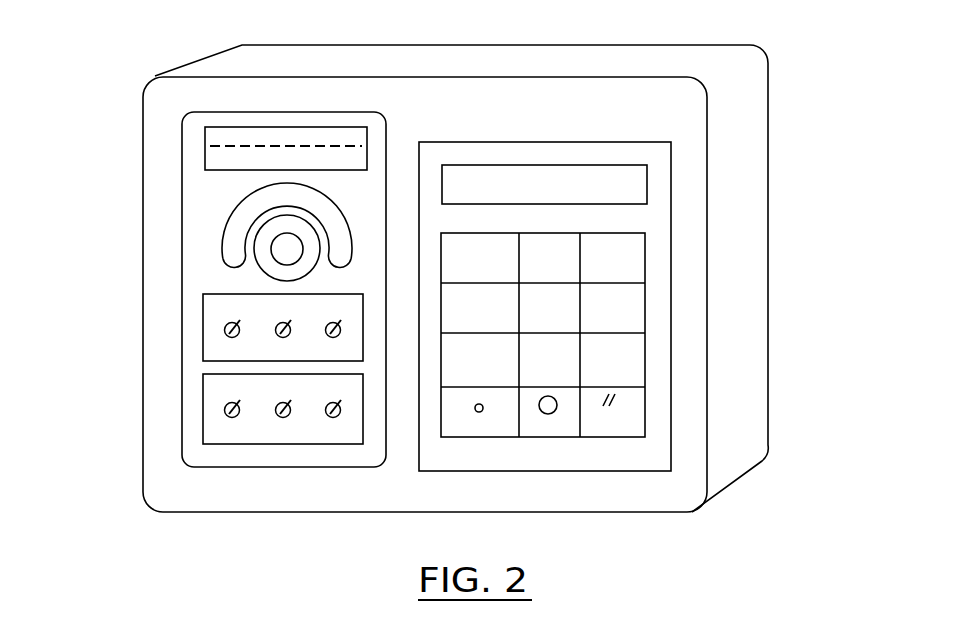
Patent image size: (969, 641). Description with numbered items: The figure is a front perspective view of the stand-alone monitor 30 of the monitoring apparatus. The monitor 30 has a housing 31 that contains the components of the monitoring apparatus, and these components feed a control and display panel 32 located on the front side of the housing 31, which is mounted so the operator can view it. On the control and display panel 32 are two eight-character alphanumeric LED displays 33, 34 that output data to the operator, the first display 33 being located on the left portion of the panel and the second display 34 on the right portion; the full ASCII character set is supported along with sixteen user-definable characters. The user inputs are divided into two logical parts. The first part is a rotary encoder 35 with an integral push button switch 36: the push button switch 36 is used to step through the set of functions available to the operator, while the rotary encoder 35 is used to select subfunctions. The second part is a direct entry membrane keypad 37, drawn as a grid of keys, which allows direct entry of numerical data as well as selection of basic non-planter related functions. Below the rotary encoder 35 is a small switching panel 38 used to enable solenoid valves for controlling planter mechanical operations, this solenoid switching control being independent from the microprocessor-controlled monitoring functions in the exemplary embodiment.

The stand-alone monitor 30 is at (125, 233).
The housing 31 is at (560, 63).
The control and display panel 32 is at (415, 470).
The alphanumeric LED display 33 is at (227, 137).
The alphanumeric LED display 34 is at (633, 187).
The rotary encoder 35 is at (307, 266).
The push button switch 36 is at (282, 253).
The direct entry membrane keypad 37 is at (642, 310).
The switching panel 38 is at (212, 402).